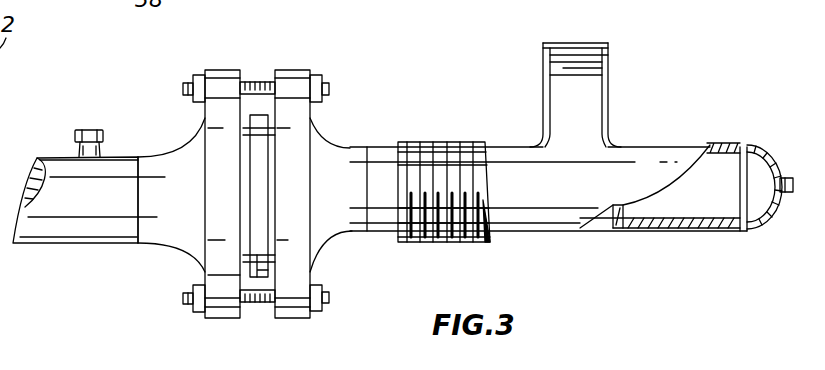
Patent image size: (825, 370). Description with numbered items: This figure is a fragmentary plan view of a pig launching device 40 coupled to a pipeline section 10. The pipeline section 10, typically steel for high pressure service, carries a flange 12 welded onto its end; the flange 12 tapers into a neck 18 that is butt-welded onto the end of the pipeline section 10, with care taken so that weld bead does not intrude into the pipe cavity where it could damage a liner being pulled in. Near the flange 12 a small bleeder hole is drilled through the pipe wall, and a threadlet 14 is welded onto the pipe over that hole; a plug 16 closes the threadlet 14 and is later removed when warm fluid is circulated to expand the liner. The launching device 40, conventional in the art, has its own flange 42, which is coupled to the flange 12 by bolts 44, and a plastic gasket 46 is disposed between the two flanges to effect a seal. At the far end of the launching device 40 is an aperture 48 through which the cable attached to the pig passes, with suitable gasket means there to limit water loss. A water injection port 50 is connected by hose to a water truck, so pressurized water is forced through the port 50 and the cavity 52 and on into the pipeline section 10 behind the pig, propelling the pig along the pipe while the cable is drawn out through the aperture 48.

The pipeline section 10 is at (67, 225).
The flange 12 is at (220, 87).
The threadlet 14 is at (107, 150).
The plug 16 is at (107, 128).
The neck 18 is at (152, 220).
The pig launching device 40 is at (522, 140).
The flange 42 is at (292, 85).
The bolts 44 is at (258, 82).
The plastic gasket 46 is at (280, 253).
The aperture 48 is at (803, 193).
The water injection port 50 is at (568, 60).
The cavity 52 is at (665, 203).